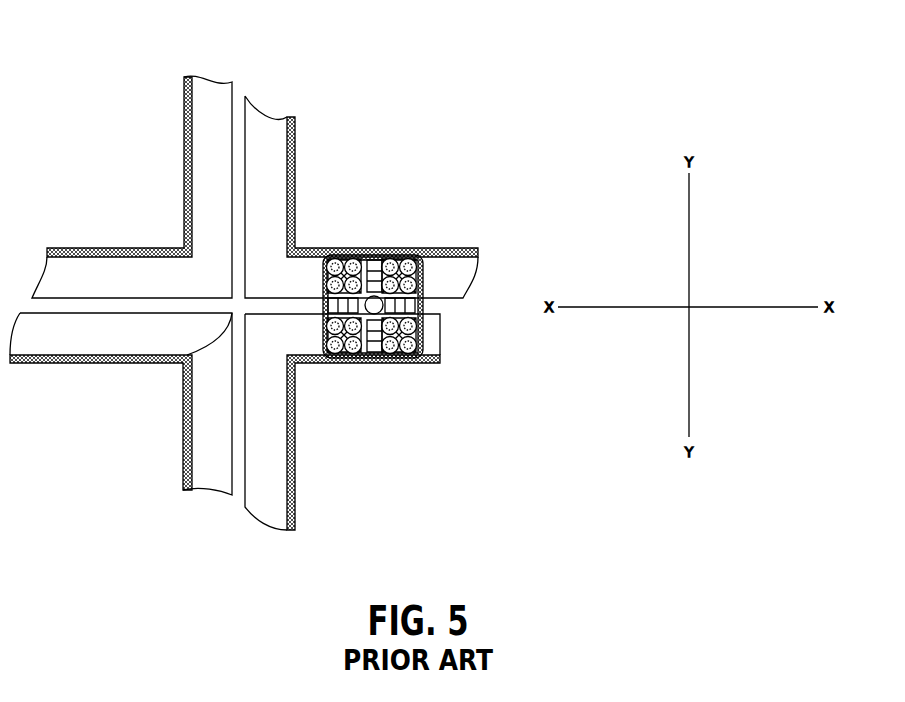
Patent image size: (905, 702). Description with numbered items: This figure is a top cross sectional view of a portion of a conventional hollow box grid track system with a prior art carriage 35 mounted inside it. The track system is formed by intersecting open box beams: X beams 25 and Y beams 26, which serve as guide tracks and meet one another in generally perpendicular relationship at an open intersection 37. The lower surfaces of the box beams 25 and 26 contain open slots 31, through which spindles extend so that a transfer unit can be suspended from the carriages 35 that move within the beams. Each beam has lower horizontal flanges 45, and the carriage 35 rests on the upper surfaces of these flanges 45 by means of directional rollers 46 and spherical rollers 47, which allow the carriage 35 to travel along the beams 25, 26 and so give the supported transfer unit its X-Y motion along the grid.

The X beam 25 is at (82, 244).
The Y beam 26 is at (300, 187).
The open slot 31 is at (238, 157).
The carriage 35 is at (407, 310).
The open intersection 37 is at (185, 355).
The lower horizontal flange 45 is at (207, 85).
The directional roller 46 is at (373, 258).
The spherical roller 47 is at (347, 253).